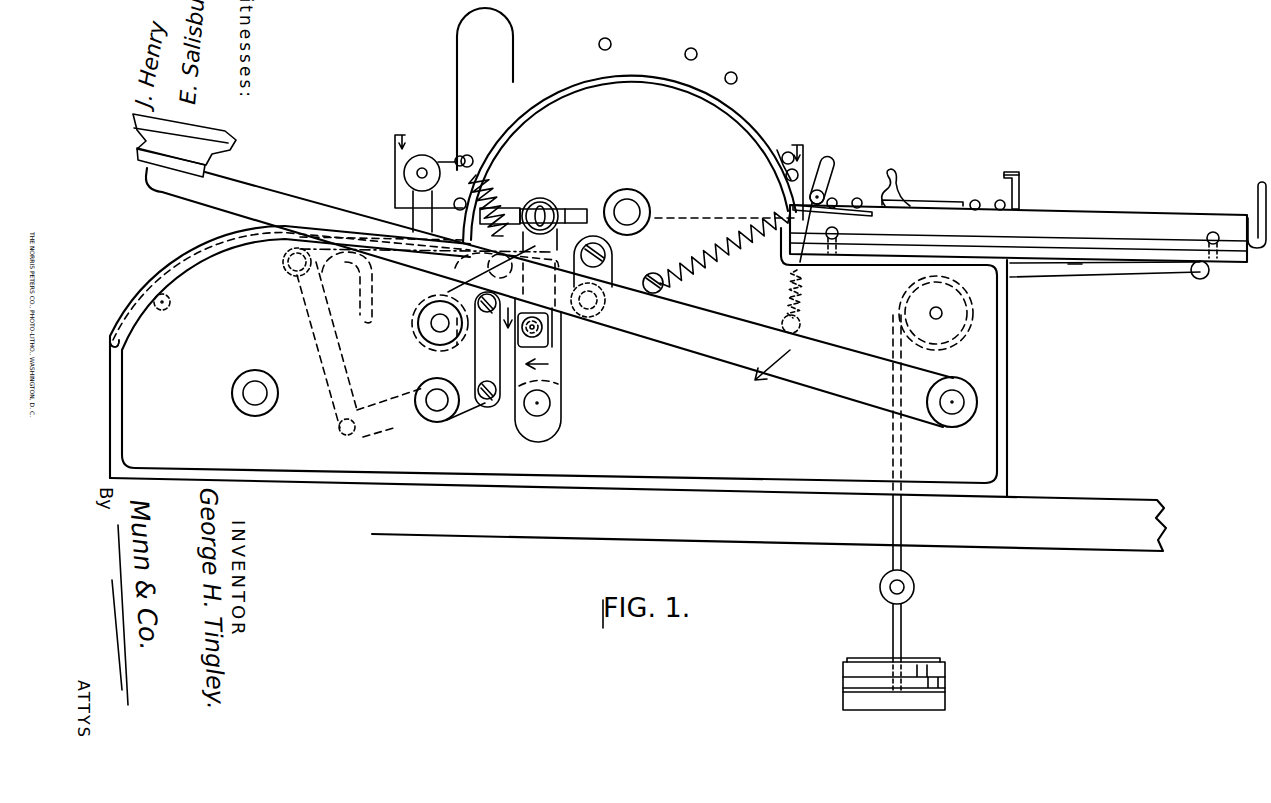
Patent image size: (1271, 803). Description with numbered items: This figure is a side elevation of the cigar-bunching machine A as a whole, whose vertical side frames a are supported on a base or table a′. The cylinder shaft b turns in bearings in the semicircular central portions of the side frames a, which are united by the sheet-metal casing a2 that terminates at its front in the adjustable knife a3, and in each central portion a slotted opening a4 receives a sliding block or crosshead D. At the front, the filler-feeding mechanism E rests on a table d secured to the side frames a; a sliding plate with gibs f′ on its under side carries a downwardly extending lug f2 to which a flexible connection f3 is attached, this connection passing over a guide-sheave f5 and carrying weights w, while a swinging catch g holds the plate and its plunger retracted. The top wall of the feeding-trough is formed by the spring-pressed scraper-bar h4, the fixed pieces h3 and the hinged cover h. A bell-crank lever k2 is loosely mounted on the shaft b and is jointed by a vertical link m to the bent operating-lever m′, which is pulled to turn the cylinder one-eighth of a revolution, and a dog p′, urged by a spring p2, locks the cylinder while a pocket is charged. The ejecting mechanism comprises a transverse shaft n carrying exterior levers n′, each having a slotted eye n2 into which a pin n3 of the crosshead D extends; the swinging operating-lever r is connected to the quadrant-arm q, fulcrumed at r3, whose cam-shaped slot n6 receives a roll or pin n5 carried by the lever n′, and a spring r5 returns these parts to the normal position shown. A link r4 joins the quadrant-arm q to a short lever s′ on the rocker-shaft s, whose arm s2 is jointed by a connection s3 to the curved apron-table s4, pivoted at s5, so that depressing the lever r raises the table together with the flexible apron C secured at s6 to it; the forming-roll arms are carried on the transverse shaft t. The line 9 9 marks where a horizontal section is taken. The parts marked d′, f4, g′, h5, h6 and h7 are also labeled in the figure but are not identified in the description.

The cigar-bunching machine A is at (629, 150).
The side frames a is at (629, 256).
The base or table a′ is at (638, 514).
The sheet-metal casing a2 is at (565, 58).
The adjustable cutter or knife a3 is at (776, 135).
The slotted opening a4 is at (583, 208).
The cylinder shaft b is at (633, 208).
The bunch-rolling flexible apron C is at (178, 262).
The crosshead D is at (516, 210).
The filler-feeding mechanism E is at (1018, 219).
The table d is at (1143, 250).
The carriage rail d′ is at (1140, 227).
The gibs f′ is at (1250, 238).
The lug f2 is at (1203, 274).
The flexible connection f3 is at (1075, 268).
The hook bracket f4 is at (1258, 192).
The guide-sheave f5 is at (950, 314).
The swinging catch g is at (1022, 190).
The bracket foot g′ is at (1014, 174).
The hinged cover h is at (928, 207).
The fixed pieces h3 is at (848, 202).
The spring-pressed bar h4 is at (815, 209).
The pawl spring h5 is at (803, 283).
The finger h6 is at (888, 183).
The return spring h7 is at (728, 258).
The bell-crank lever k2 is at (447, 163).
The vertical link m is at (413, 190).
The bent operating-lever m′ is at (515, 48).
The transverse shaft n is at (548, 408).
The exterior lever n′ is at (560, 376).
The slotted opening n2 is at (580, 208).
The pin n3 is at (540, 202).
The roll or pin n5 is at (548, 341).
The cam-shaped slot n6 is at (548, 319).
The stop dog p′ is at (606, 263).
The spring p2 is at (568, 254).
The quadrant-arm q is at (455, 288).
The swinging operating-lever r is at (260, 193).
The fulcrum r3 is at (437, 325).
The link r4 is at (485, 365).
The return spring r5 is at (474, 190).
The rocker-shaft s is at (425, 393).
The short lever s′ is at (470, 402).
The arm s2 is at (398, 428).
The connection s3 is at (312, 324).
The apron-supporting table s4 is at (347, 287).
The pivot s5 is at (171, 302).
The apron attachment point s6 is at (111, 335).
The roll shaft t is at (250, 392).
The weights w is at (855, 668).
The section line 9 9 is at (597, 171).